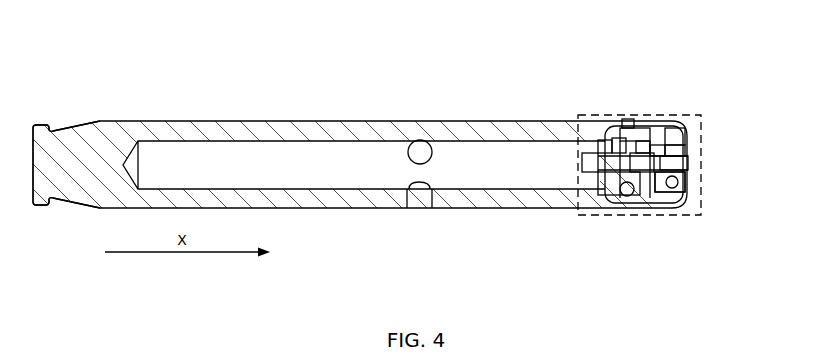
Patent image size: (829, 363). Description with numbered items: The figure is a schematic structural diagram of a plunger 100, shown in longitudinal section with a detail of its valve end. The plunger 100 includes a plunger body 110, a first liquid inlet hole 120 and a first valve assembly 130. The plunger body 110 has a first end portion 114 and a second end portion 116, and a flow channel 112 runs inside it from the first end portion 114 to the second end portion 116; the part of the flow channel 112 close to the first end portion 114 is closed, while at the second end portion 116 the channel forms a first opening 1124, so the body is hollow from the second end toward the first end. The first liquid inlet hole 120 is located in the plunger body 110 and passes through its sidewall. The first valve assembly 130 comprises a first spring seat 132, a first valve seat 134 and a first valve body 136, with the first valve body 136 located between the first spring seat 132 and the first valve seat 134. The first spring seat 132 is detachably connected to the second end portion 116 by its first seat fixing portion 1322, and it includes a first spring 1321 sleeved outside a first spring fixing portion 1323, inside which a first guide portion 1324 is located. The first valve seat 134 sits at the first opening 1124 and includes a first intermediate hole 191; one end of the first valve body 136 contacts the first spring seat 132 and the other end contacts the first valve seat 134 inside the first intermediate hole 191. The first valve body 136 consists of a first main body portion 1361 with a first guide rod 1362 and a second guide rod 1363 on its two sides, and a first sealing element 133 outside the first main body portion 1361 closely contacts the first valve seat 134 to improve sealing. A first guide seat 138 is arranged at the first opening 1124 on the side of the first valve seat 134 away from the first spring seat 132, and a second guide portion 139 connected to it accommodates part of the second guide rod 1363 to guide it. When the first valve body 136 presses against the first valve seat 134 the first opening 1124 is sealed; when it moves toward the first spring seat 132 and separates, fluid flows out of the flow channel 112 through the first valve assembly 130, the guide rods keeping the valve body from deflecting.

The plunger 100 is at (412, 306).
The plunger body 110 is at (252, 132).
The flow channel 112 is at (368, 160).
The first end portion 114 is at (40, 165).
The second end portion 116 is at (625, 130).
The first liquid inlet hole 120 is at (416, 140).
The first opening 1124 is at (598, 142).
The first valve assembly 130 is at (702, 118).
The first spring seat 132 is at (677, 135).
The first spring 1321 is at (655, 150).
The first seat fixing portion 1322 is at (628, 122).
The first spring fixing portion 1323 is at (675, 152).
The first guide portion 1324 is at (690, 167).
The first sealing element 133 is at (642, 142).
The first valve seat 134 is at (642, 165).
The first valve body 136 is at (674, 168).
The first main body portion 1361 is at (670, 182).
The first guide rod 1362 is at (676, 164).
The second guide rod 1363 is at (593, 165).
The first guide seat 138 is at (618, 145).
The second guide portion 139 is at (613, 175).
The first intermediate hole 191 is at (627, 188).